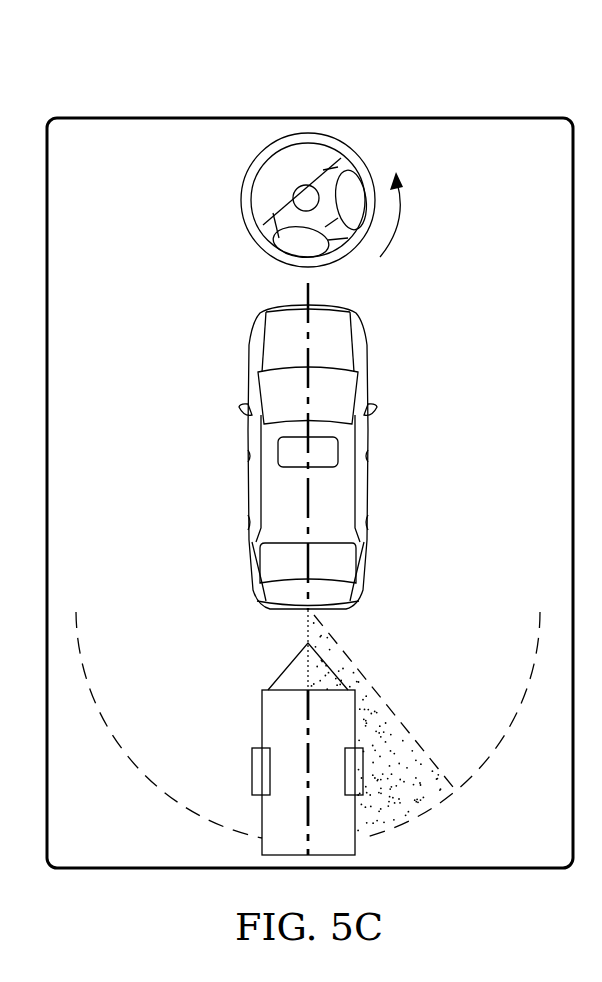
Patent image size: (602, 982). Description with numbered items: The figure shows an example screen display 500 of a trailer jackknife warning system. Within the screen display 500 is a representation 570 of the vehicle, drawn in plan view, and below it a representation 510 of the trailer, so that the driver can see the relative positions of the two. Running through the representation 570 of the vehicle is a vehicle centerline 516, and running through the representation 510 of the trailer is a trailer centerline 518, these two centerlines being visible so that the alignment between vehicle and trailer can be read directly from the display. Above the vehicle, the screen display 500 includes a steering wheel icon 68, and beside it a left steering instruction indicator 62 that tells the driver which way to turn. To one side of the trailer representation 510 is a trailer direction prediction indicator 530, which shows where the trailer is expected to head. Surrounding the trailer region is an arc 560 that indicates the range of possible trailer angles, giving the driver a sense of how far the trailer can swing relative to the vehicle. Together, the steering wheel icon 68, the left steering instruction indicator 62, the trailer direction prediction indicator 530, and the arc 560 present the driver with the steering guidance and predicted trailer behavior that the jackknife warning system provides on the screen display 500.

The screen display 500 is at (546, 80).
The steering wheel icon 68 is at (242, 198).
The left steering instruction indicator 62 is at (398, 215).
The vehicle centerline 516 is at (307, 293).
The representation of the vehicle 570 is at (248, 362).
The representation of the trailer 510 is at (262, 700).
The trailer centerline 518 is at (307, 713).
The trailer direction prediction indicator 530 is at (403, 738).
The arc 560 is at (160, 788).